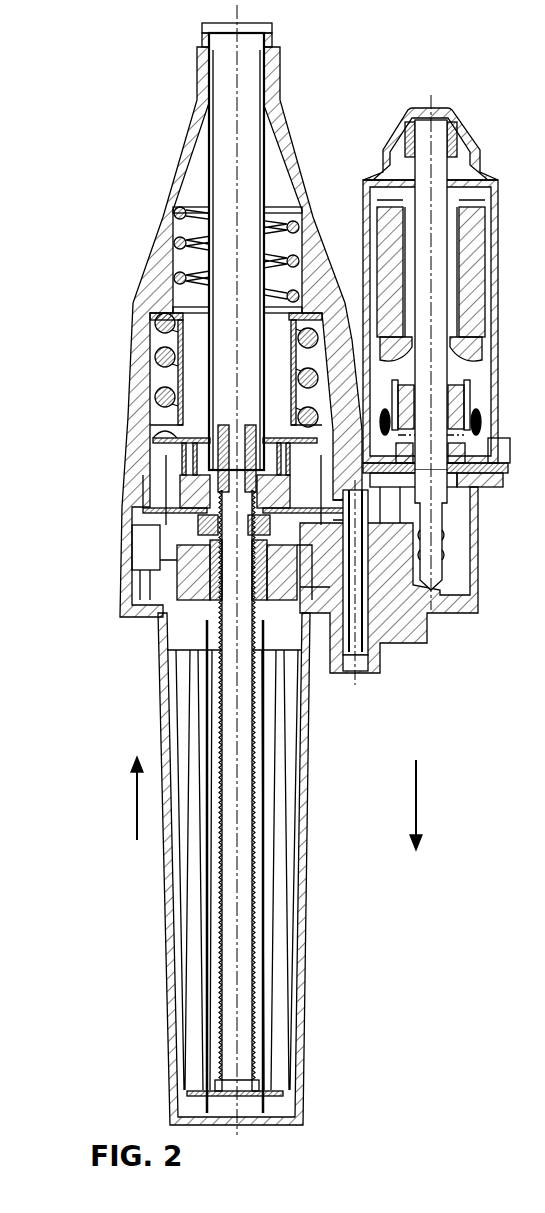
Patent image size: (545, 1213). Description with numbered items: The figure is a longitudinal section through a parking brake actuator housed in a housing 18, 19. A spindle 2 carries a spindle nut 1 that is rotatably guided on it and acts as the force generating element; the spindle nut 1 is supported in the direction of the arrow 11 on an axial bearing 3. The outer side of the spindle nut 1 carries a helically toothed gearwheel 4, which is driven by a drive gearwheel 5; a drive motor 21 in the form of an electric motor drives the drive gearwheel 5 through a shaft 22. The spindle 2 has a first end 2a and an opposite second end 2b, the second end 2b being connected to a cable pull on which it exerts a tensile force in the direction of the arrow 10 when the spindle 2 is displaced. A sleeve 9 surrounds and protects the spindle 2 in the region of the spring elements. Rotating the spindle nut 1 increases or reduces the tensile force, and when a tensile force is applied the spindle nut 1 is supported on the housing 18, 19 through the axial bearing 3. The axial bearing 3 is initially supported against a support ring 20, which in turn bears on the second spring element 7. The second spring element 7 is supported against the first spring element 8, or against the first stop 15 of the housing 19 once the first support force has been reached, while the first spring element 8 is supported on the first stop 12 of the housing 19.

The spindle nut 1 is at (200, 600).
The spindle 2 is at (250, 788).
The first end 2a is at (242, 1098).
The second end 2b is at (233, 487).
The axial bearing 3 is at (200, 533).
The helically toothed gearwheel 4 is at (305, 600).
The drive gearwheel 5 is at (410, 570).
The second spring element 7 is at (163, 360).
The first spring element 8 is at (278, 252).
The sleeve 9 is at (263, 145).
The arrow 10 is at (417, 803).
The arrow 11 is at (137, 805).
The first stop 12 is at (188, 207).
The first stop 15 is at (155, 298).
The housing 18 is at (306, 872).
The housing 19 is at (283, 125).
The support ring 20 is at (277, 507).
The drive motor 21 is at (480, 247).
The shaft 22 is at (433, 505).